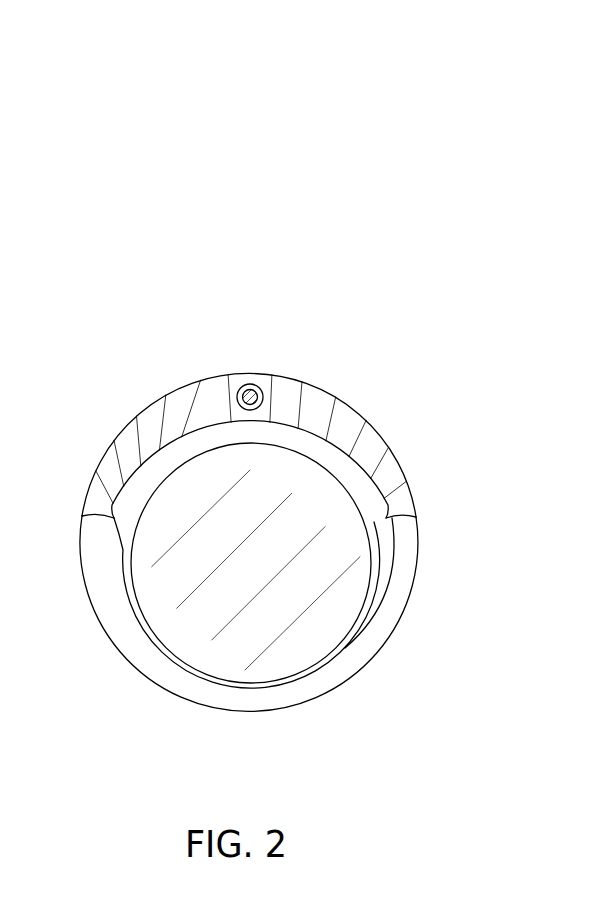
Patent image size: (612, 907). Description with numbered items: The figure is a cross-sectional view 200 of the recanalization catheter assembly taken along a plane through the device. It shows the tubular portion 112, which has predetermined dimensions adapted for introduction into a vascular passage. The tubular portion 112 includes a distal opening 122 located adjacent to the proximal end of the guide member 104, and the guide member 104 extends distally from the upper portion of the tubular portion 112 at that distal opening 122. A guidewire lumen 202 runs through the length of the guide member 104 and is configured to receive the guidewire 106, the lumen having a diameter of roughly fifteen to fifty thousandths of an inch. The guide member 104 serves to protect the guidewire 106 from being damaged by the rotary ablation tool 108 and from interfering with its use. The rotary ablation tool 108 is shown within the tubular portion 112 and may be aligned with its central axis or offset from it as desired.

The cross-sectional view 200 is at (232, 88).
The guide member 104 is at (343, 430).
The guidewire 106 is at (251, 394).
The guidewire lumen 202 is at (240, 400).
The rotary ablation tool 108 is at (175, 602).
The tubular portion 112 is at (354, 655).
The distal opening 122 is at (377, 527).